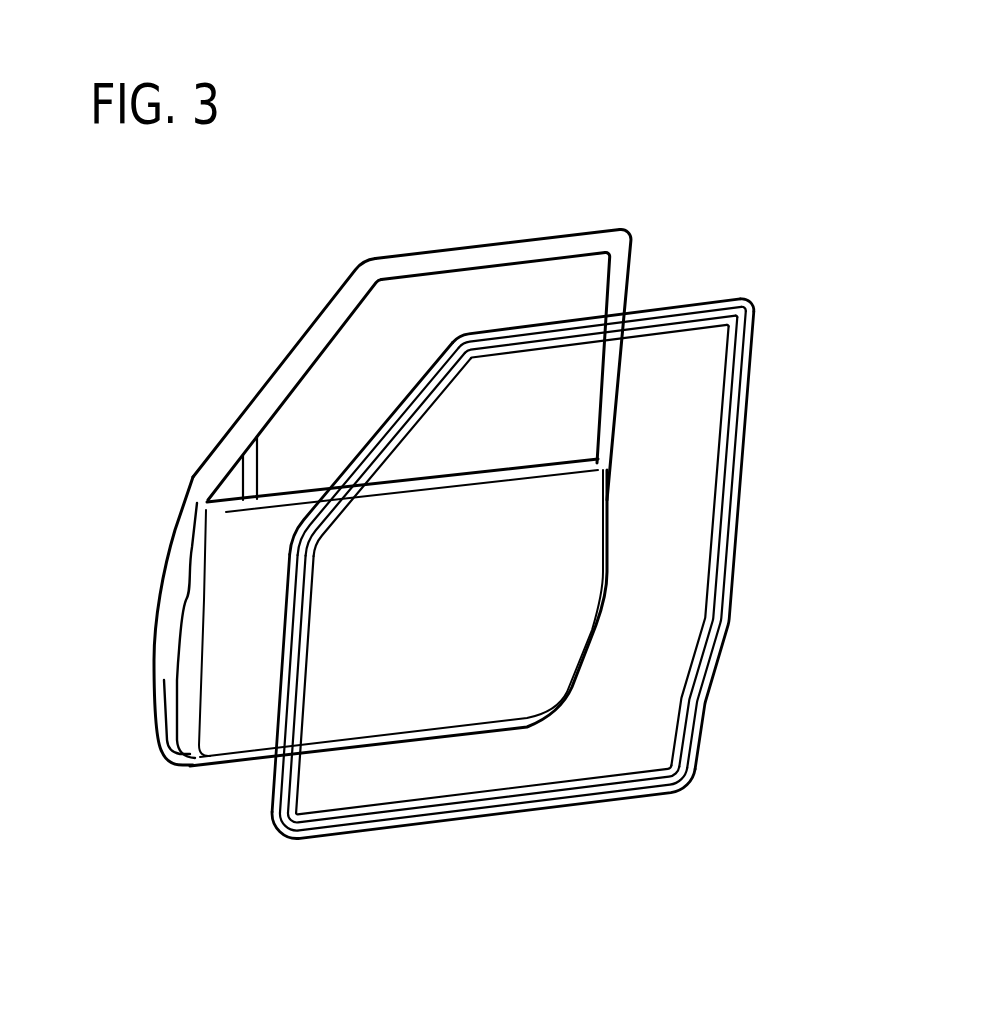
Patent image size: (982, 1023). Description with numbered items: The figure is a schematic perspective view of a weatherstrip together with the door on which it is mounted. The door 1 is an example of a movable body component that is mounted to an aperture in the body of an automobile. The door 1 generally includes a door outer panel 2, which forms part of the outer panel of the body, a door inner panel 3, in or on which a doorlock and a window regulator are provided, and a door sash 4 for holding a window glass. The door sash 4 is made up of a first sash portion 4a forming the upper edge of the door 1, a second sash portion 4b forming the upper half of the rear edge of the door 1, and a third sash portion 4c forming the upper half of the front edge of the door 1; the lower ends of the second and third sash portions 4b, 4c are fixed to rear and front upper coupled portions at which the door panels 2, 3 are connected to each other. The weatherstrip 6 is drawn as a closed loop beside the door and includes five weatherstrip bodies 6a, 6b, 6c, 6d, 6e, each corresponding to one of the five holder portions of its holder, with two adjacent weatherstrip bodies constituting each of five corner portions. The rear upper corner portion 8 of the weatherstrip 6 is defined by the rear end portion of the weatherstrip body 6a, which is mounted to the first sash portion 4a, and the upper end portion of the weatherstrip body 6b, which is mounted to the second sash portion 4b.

The door 1 is at (128, 542).
The door outer panel 2 is at (153, 648).
The door inner panel 3 is at (563, 687).
The door sash 4 is at (232, 328).
The first sash portion 4a is at (514, 246).
The second sash portion 4b is at (634, 266).
The third sash portion 4c is at (343, 286).
The weatherstrip 6 is at (790, 405).
The weatherstrip body 6a is at (509, 327).
The weatherstrip body 6b is at (727, 532).
The weatherstrip body 6c is at (488, 814).
The weatherstrip body 6d is at (307, 658).
The weatherstrip body 6e is at (406, 400).
The rear upper corner portion 8 is at (756, 306).